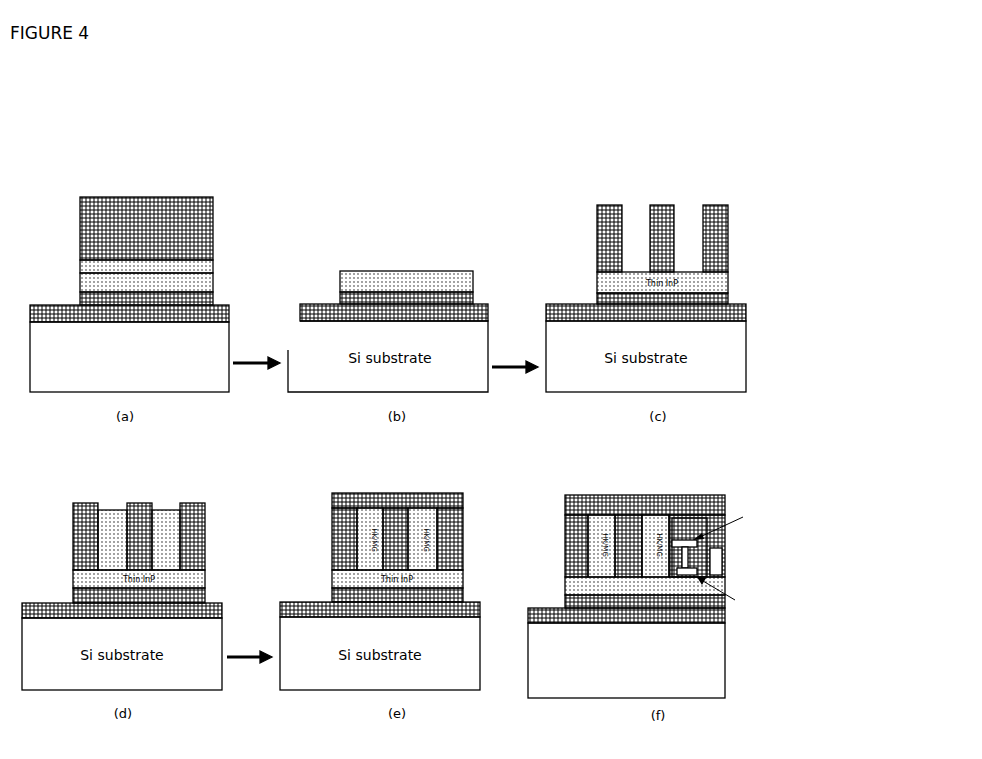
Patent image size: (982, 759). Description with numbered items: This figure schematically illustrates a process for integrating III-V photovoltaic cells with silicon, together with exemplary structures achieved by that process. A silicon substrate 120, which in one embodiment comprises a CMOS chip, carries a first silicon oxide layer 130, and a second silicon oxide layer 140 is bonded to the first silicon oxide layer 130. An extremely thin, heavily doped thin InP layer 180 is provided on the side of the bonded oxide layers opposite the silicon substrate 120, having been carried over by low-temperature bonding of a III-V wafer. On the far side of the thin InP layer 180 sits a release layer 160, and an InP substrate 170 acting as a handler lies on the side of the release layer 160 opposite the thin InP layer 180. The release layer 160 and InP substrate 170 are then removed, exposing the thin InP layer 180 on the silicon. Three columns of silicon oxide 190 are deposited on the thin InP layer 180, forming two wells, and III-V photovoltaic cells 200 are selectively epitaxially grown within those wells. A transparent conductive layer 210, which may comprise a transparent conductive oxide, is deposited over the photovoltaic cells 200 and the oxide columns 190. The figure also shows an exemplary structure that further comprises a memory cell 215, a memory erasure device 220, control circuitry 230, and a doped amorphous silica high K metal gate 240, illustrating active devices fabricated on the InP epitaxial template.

The silicon substrate 120 is at (167, 365).
The first silicon oxide layer 130 is at (320, 307).
The second silicon oxide layer 140 is at (335, 295).
The release layer 160 is at (215, 260).
The InP substrate 170 is at (187, 205).
The thin InP layer 180 is at (335, 277).
The silicon oxide columns 190 is at (660, 203).
The III-V photovoltaic cells 200 is at (158, 503).
The transparent conductive layer 210 is at (398, 483).
The memory cell 215 is at (727, 568).
The memory erasure device 220 is at (727, 560).
The control circuitry 230 is at (681, 494).
The doped amorphous silica high K metal gate 240 is at (672, 660).